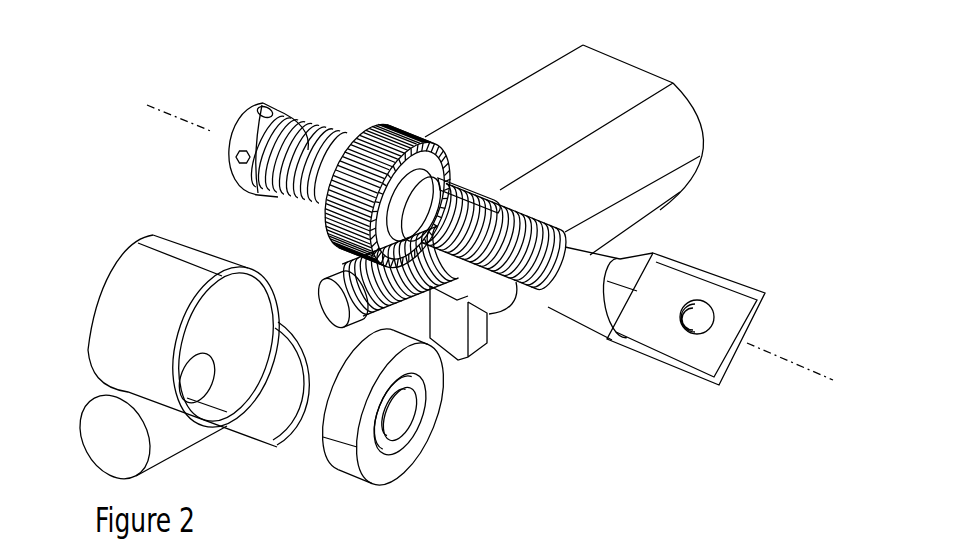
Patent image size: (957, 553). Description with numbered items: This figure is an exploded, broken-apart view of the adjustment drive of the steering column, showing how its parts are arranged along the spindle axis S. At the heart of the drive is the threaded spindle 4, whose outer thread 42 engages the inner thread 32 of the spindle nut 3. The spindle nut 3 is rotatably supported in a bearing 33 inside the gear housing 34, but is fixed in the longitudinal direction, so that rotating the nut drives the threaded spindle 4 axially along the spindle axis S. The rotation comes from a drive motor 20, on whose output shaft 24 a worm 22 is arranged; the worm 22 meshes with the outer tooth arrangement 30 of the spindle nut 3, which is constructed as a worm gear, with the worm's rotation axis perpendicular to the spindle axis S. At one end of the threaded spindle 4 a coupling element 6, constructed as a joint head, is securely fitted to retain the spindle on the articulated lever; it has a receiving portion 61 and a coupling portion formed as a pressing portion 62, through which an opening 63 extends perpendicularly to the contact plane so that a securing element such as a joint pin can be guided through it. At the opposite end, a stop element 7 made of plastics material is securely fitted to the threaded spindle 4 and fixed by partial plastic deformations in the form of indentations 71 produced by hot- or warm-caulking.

The spindle axis S is at (161, 108).
The spindle nut 3 is at (413, 162).
The threaded spindle 4 is at (547, 293).
The coupling element 6 is at (692, 309).
The stop element 7 is at (230, 144).
The drive motor 20 is at (583, 118).
The worm 22 is at (370, 280).
The output shaft 24 is at (330, 300).
The outer tooth arrangement 30 is at (371, 128).
The inner thread 32 is at (462, 198).
The bearing 33 is at (403, 464).
The gear housing 34 is at (130, 292).
The outer thread 42 is at (513, 217).
The receiving portion 61 is at (583, 293).
The pressing portion 62 is at (722, 330).
The opening 63 is at (700, 318).
The indentations 71 is at (230, 159).